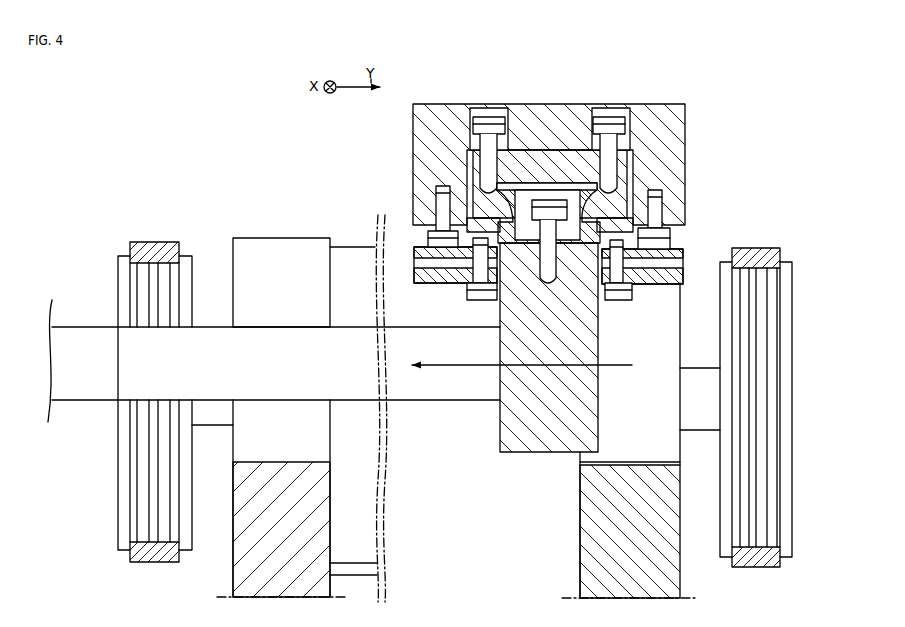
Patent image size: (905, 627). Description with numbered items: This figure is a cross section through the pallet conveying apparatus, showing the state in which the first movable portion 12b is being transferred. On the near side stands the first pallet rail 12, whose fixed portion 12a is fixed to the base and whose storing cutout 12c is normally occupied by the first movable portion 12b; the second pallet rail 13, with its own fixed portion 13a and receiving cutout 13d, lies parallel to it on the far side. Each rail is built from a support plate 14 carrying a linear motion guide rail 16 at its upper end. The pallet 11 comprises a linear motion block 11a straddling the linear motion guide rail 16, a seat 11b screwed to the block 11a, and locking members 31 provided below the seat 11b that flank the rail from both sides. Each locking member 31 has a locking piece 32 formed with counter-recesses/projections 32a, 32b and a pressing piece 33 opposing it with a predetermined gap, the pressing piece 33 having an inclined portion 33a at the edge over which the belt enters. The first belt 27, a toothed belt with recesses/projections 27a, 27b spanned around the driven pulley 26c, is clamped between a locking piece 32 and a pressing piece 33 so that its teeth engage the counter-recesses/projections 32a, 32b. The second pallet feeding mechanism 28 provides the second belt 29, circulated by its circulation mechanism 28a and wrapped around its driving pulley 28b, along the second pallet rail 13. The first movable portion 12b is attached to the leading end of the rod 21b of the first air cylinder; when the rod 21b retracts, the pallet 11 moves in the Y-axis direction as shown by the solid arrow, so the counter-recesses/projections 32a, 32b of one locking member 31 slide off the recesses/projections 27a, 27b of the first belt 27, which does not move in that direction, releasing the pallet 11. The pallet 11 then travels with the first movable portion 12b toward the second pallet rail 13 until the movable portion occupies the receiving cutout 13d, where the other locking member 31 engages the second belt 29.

The pallet 11 is at (650, 103).
The linear motion block 11a is at (560, 150).
The seat 11b is at (572, 108).
The first pallet rail 12 is at (562, 510).
The fixed portion 12a is at (579, 547).
The first movable portion 12b is at (495, 416).
The storing cutout 12c is at (580, 462).
The second pallet rail 13 is at (349, 518).
The fixed portion 13a is at (339, 545).
The receiving cutout 13d is at (331, 444).
The support plate 14 is at (681, 574).
The linear motion guide rail 16 is at (571, 248).
The rod 21b is at (398, 402).
The driven pulley 26c is at (795, 416).
The first belt 27 is at (776, 248).
The recesses/projections 27a is at (758, 272).
The recesses/projections 27b is at (799, 407).
The second pallet feeding mechanism 28 is at (199, 266).
The circulation mechanism 28a is at (359, 565).
The driving pulley 28b is at (192, 480).
The second belt 29 is at (166, 241).
The locking member 31 is at (447, 287).
The locking piece 32 is at (413, 276).
The counter-recesses/projections 32a is at (413, 266).
The counter-recesses/projections 32b is at (574, 243).
The pressing piece 33 is at (416, 238).
The inclined portion 33a is at (416, 249).